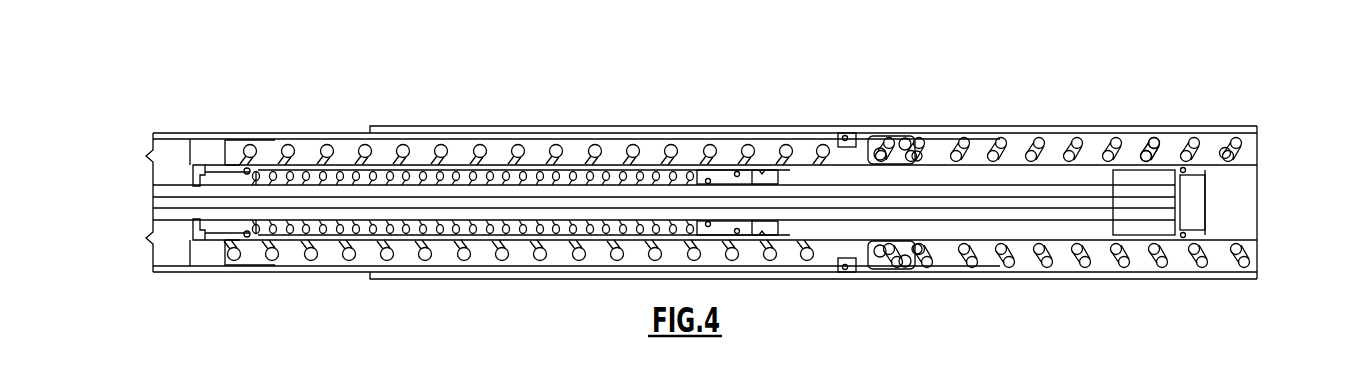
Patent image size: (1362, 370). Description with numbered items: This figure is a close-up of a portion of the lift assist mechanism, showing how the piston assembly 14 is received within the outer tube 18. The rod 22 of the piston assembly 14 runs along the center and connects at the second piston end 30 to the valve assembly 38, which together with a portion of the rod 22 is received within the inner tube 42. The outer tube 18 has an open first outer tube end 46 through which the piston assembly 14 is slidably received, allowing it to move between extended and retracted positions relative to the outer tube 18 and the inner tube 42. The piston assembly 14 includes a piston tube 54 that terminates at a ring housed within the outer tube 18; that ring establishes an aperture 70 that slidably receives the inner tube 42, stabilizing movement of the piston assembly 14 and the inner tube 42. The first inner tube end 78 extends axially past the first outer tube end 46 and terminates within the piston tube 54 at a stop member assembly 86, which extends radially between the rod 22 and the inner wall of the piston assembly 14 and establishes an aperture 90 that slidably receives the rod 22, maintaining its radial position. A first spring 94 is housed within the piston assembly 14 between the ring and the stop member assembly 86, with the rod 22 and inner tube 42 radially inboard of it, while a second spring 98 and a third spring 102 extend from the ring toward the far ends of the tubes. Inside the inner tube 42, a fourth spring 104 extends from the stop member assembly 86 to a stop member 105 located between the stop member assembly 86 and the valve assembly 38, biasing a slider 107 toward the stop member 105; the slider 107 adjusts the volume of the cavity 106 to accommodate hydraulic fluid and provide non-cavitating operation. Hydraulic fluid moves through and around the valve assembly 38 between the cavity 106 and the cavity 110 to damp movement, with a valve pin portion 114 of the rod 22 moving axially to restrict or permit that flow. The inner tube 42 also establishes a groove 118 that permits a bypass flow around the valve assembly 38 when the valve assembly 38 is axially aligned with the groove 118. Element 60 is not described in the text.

The piston assembly 14 is at (265, 85).
The outer tube 18 is at (1091, 130).
The rod 22 is at (158, 192).
The second piston end 30 is at (1245, 221).
The valve assembly 38 is at (1158, 150).
The inner tube 42 is at (1200, 160).
The first outer tube end 46 is at (369, 128).
The piston tube 54 is at (190, 130).
The retainer 60 is at (856, 153).
The aperture 70 is at (852, 163).
The first inner tube end 78 is at (184, 164).
The stop member assembly 86 is at (232, 131).
The aperture 90 is at (235, 190).
The first spring 94 is at (675, 150).
The second spring 98 is at (1240, 160).
The third spring 102 is at (1225, 147).
The fourth spring 104 is at (614, 172).
The stop member 105 is at (762, 173).
The cavity 106 is at (1053, 168).
The slider 107 is at (725, 178).
The cavity 110 is at (1241, 201).
The valve pin portion 114 is at (1137, 200).
The groove 118 is at (980, 164).